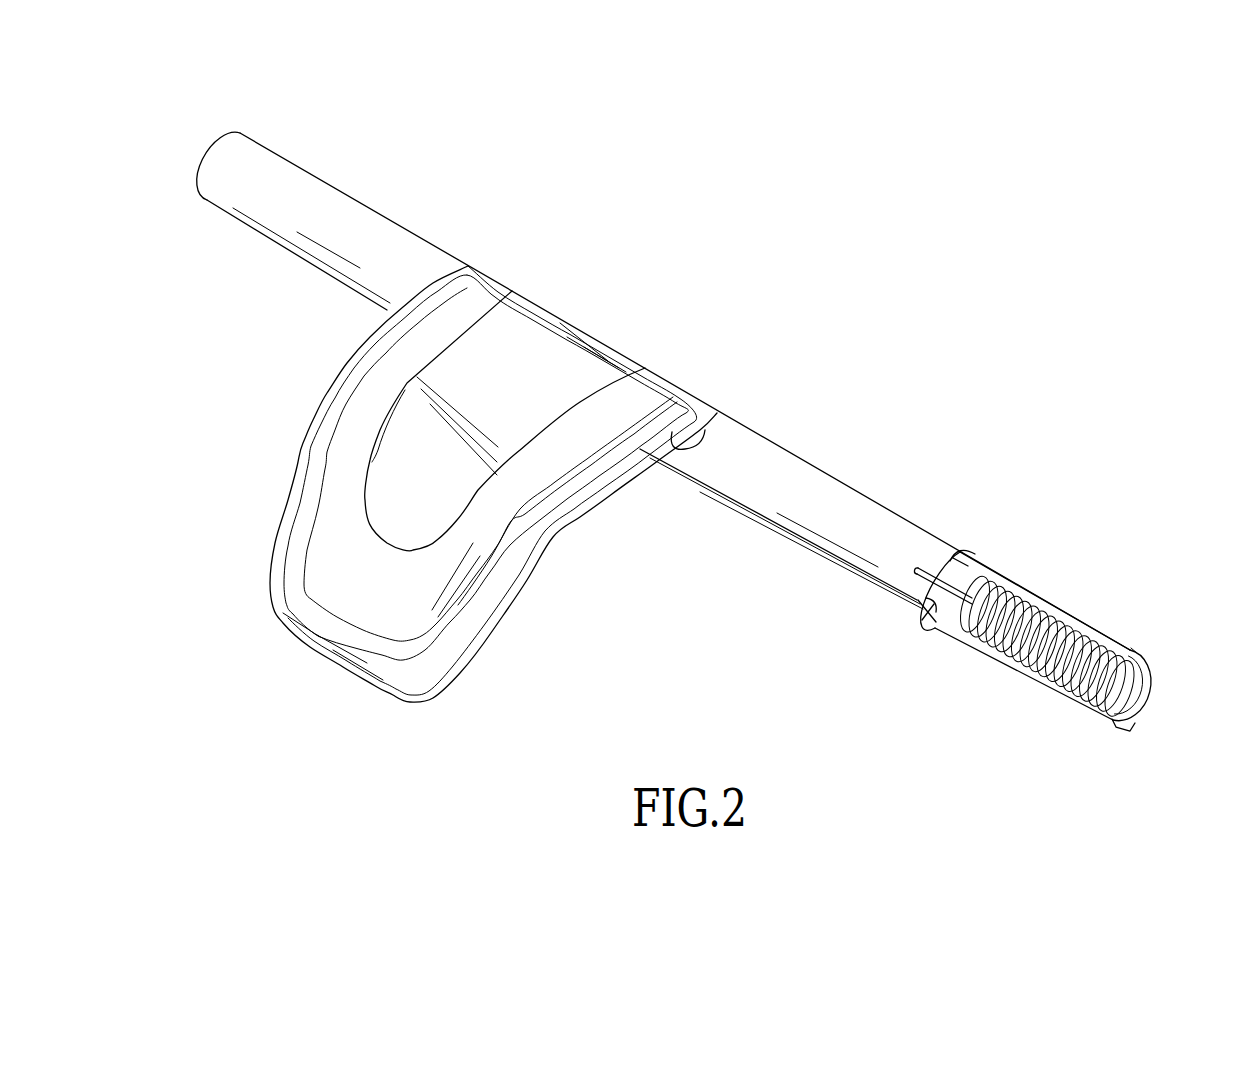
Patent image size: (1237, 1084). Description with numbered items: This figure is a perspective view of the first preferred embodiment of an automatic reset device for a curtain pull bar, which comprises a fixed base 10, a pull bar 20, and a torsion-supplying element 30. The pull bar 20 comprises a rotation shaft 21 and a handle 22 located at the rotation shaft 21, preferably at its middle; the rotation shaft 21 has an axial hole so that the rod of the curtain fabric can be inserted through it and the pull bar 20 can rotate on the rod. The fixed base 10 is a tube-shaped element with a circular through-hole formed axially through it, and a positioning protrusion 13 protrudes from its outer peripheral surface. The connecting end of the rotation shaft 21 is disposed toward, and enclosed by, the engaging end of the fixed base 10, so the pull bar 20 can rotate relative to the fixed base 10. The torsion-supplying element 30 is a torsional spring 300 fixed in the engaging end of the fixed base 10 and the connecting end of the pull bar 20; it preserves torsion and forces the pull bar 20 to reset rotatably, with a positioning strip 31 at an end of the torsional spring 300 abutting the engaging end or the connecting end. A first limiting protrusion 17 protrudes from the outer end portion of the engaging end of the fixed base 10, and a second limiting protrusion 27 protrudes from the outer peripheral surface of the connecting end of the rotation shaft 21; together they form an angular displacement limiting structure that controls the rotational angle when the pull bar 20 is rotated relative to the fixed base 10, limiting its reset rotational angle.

The fixed base 10 is at (1120, 623).
The positioning protrusion 13 is at (1132, 726).
The first limiting protrusion 17 is at (922, 612).
The pull bar 20 is at (860, 432).
The rotation shaft 21 is at (781, 517).
The handle 22 is at (345, 464).
The second limiting protrusion 27 is at (972, 560).
The torsion-supplying element 30 is at (1072, 613).
The positioning strip 31 is at (954, 610).
The torsional spring 300 is at (1025, 607).